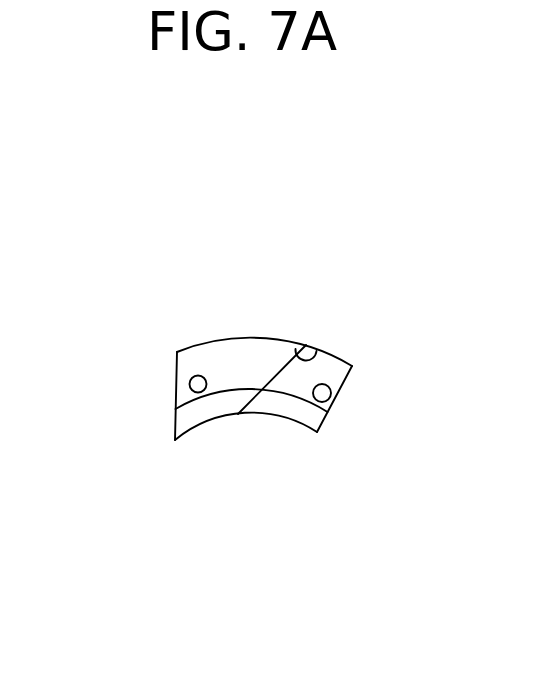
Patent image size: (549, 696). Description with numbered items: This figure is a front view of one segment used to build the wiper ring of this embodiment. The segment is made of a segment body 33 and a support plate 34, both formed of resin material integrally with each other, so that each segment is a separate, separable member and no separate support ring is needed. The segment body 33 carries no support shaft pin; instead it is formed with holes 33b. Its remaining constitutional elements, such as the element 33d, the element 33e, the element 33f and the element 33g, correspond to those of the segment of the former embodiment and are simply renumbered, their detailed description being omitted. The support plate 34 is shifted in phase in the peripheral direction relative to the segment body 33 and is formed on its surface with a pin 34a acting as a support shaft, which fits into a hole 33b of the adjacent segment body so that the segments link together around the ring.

The segment body 33 is at (232, 340).
The holes 33b is at (190, 390).
The notch 33d is at (315, 358).
The end edge 33e is at (176, 371).
The slant line 33f is at (243, 413).
The step line 33g is at (215, 410).
The support plate 34 is at (338, 353).
The pins 34a is at (333, 388).